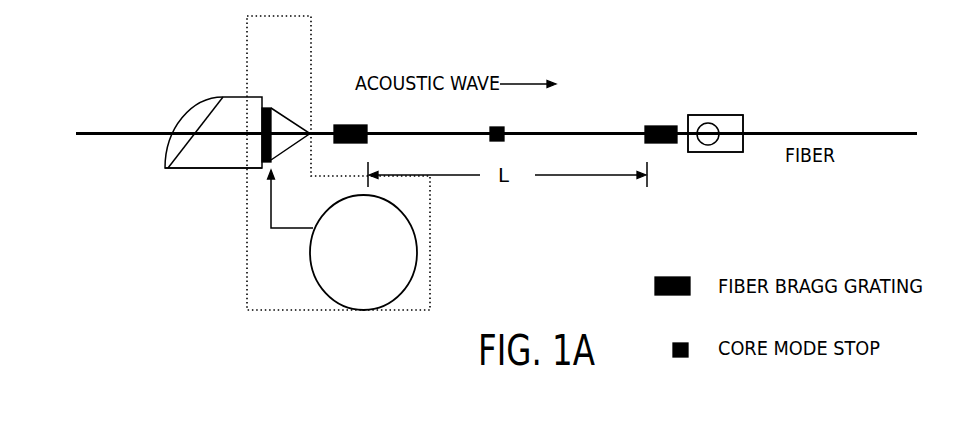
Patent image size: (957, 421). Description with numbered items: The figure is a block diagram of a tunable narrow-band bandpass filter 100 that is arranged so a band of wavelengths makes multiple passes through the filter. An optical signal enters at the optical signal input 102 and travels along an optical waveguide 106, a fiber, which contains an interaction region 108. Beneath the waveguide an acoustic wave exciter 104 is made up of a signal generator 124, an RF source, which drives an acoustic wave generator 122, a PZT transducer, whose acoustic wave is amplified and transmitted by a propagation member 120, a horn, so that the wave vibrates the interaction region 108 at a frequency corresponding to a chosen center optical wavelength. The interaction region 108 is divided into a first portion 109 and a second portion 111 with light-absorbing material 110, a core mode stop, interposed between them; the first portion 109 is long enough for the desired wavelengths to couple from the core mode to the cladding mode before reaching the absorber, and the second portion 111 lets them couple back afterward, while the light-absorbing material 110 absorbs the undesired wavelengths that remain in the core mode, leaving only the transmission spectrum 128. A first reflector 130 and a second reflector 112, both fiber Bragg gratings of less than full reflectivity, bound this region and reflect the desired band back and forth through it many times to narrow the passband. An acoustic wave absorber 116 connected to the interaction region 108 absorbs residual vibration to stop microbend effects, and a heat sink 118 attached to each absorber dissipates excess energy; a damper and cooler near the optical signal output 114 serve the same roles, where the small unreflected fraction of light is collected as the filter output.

The tunable narrow-band bandpass filter 100 is at (587, 278).
The optical signal input 102 is at (150, 120).
The acoustic wave exciter 104 is at (295, 300).
The optical waveguide 106 is at (103, 157).
The interaction region 108 is at (577, 118).
The first portion of the interaction region 109 is at (453, 142).
The light-absorbing material 110 is at (496, 146).
The second portion of the interaction region 111 is at (592, 142).
The second reflector 112 is at (667, 117).
The optical signal output 114 is at (753, 120).
The acoustic wave absorber 116 is at (222, 86).
The heat sink 118 is at (238, 182).
The propagation member 120 is at (298, 114).
The acoustic wave generator 122 is at (258, 86).
The signal generator 124 is at (380, 277).
The transmission spectrum 128 is at (314, 410).
The first reflector 130 is at (366, 118).